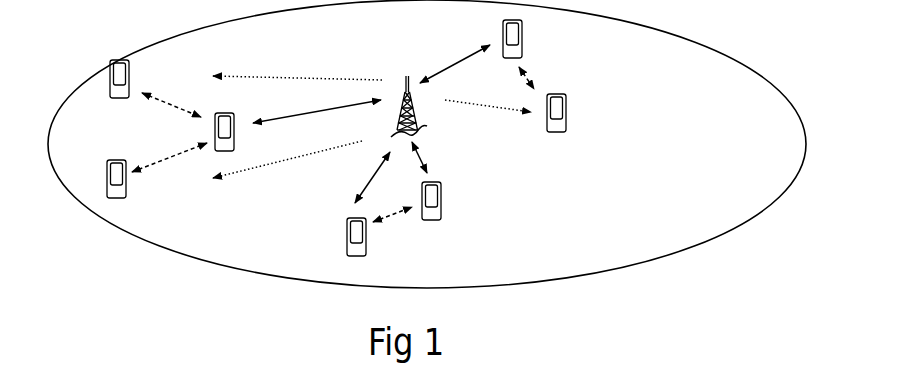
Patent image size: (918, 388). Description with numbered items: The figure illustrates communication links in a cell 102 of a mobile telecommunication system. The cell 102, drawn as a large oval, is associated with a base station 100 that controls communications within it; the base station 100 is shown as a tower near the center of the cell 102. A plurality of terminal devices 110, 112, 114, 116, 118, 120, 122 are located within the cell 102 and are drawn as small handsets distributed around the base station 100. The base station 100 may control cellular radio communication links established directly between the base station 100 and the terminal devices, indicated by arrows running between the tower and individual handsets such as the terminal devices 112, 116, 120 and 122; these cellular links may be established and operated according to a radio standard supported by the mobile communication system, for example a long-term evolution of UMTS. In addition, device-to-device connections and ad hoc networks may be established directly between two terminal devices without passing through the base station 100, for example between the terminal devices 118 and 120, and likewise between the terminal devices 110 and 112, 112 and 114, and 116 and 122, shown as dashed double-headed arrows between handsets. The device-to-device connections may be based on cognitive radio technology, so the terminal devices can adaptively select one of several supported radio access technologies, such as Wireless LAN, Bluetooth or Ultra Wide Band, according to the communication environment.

The base station 100 is at (440, 117).
The cell 102 is at (333, 32).
The terminal device 110 is at (130, 64).
The terminal device 112 is at (235, 141).
The terminal device 114 is at (127, 188).
The terminal device 116 is at (442, 210).
The terminal device 118 is at (567, 122).
The terminal device 120 is at (523, 48).
The terminal device 122 is at (367, 246).